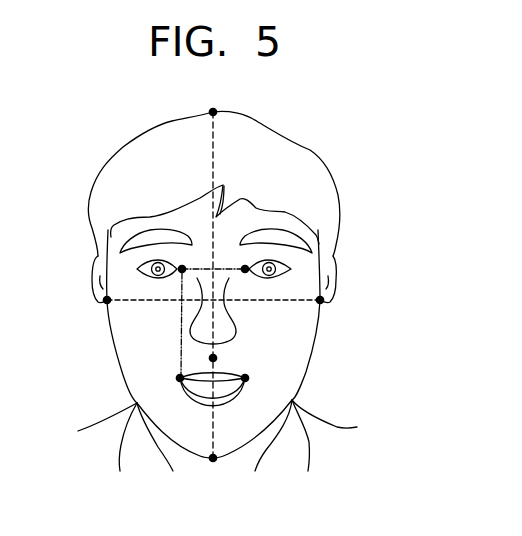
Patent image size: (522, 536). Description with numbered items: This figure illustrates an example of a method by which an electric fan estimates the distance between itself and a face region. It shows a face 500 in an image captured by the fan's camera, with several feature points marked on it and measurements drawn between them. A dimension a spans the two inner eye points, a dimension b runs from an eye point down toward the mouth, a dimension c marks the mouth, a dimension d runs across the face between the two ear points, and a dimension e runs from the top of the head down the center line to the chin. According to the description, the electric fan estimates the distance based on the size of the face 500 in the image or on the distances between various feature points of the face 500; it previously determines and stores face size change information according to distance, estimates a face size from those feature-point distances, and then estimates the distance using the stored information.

The face 500 is at (312, 150).
The distance between inner eye corners a is at (213, 256).
The distance from eye to mouth b is at (169, 323).
The mouth c is at (217, 383).
The distance between ears (face width) d is at (213, 314).
The top of head point / face center line e is at (213, 268).